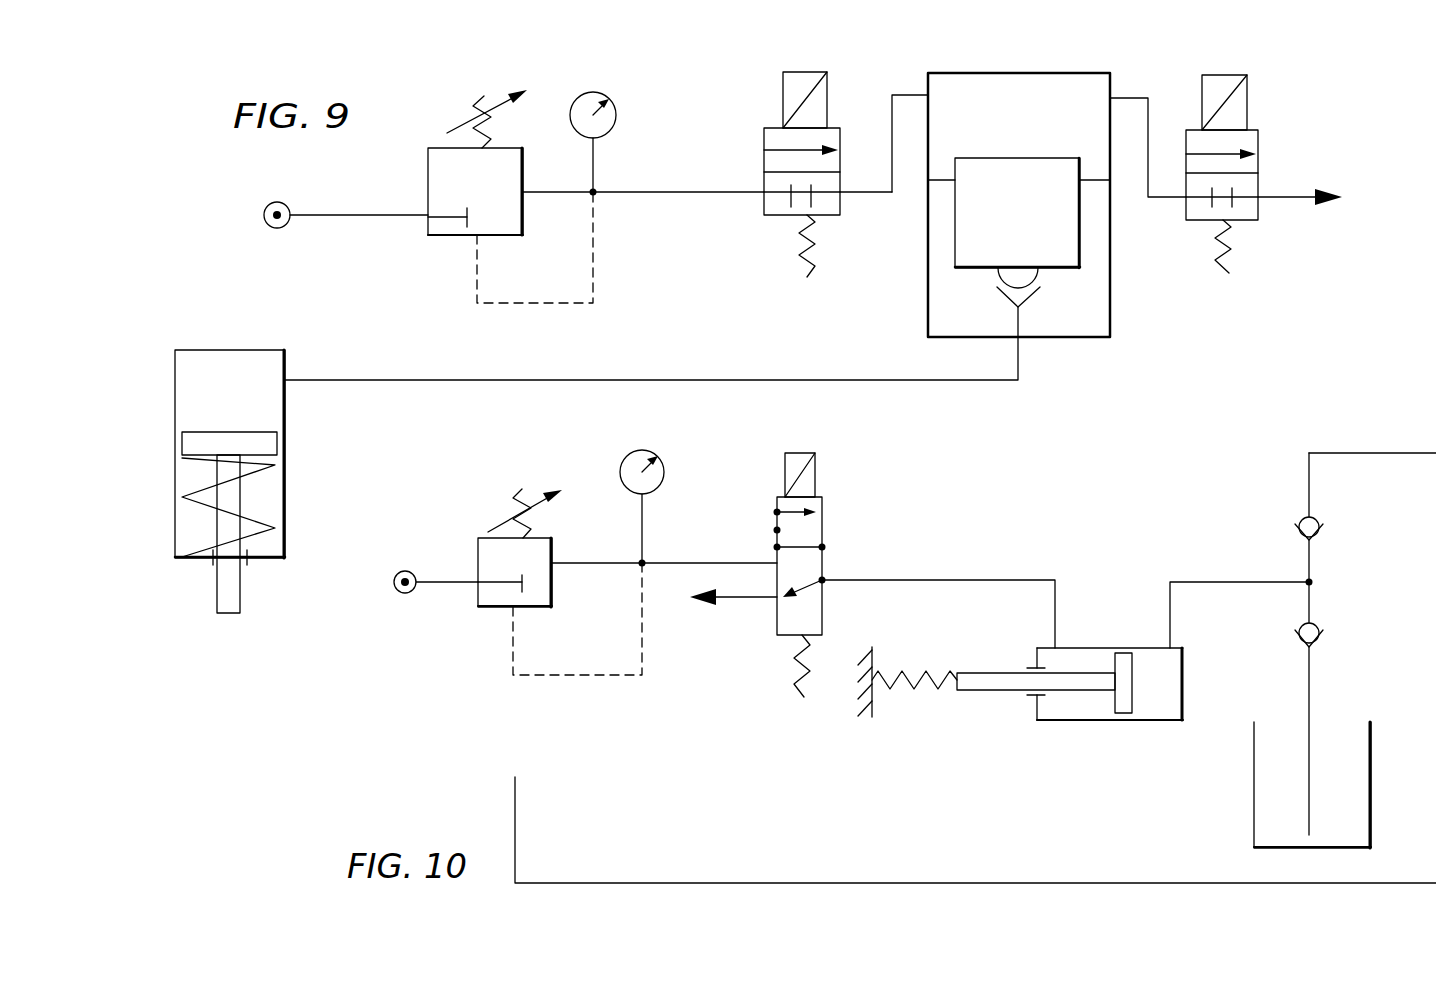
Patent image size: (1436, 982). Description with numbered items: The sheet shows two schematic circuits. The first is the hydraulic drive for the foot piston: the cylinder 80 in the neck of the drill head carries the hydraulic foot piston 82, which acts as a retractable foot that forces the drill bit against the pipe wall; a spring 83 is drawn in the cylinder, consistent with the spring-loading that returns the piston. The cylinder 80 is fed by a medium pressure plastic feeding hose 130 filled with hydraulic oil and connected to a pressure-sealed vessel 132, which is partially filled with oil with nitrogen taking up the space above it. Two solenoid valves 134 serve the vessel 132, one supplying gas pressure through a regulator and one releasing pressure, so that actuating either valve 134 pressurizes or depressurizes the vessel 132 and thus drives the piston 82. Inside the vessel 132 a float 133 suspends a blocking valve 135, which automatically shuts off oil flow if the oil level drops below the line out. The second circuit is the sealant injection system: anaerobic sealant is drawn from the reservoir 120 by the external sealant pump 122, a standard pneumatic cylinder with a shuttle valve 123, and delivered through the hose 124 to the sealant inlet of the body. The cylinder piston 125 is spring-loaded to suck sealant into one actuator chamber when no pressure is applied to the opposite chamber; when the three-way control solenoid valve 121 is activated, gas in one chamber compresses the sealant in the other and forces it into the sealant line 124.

In FIG. 9, the cylinder 80 is at (235, 390).
In FIG. 9, the foot piston 82 is at (245, 583).
In FIG. 9, the spring 83 is at (255, 518).
In FIG. 9, the plastic feeding hose 130 is at (730, 380).
In FIG. 9, the pressure-sealed vessel 132 is at (1110, 240).
In FIG. 9, the float 133 is at (1030, 217).
In FIG. 9, the solenoid valve 134 is at (764, 160).
In FIG. 9, the blocking valve 135 is at (995, 282).
In FIG. 10, the reservoir 120 is at (1318, 753).
In FIG. 10, the three-way control solenoid valve 121 is at (822, 532).
In FIG. 10, the sealant pump 122 is at (1080, 662).
In FIG. 10, the shuttle valve 123 is at (1309, 558).
In FIG. 10, the hose 124 is at (955, 883).
In FIG. 10, the cylinder piston 125 is at (1005, 685).